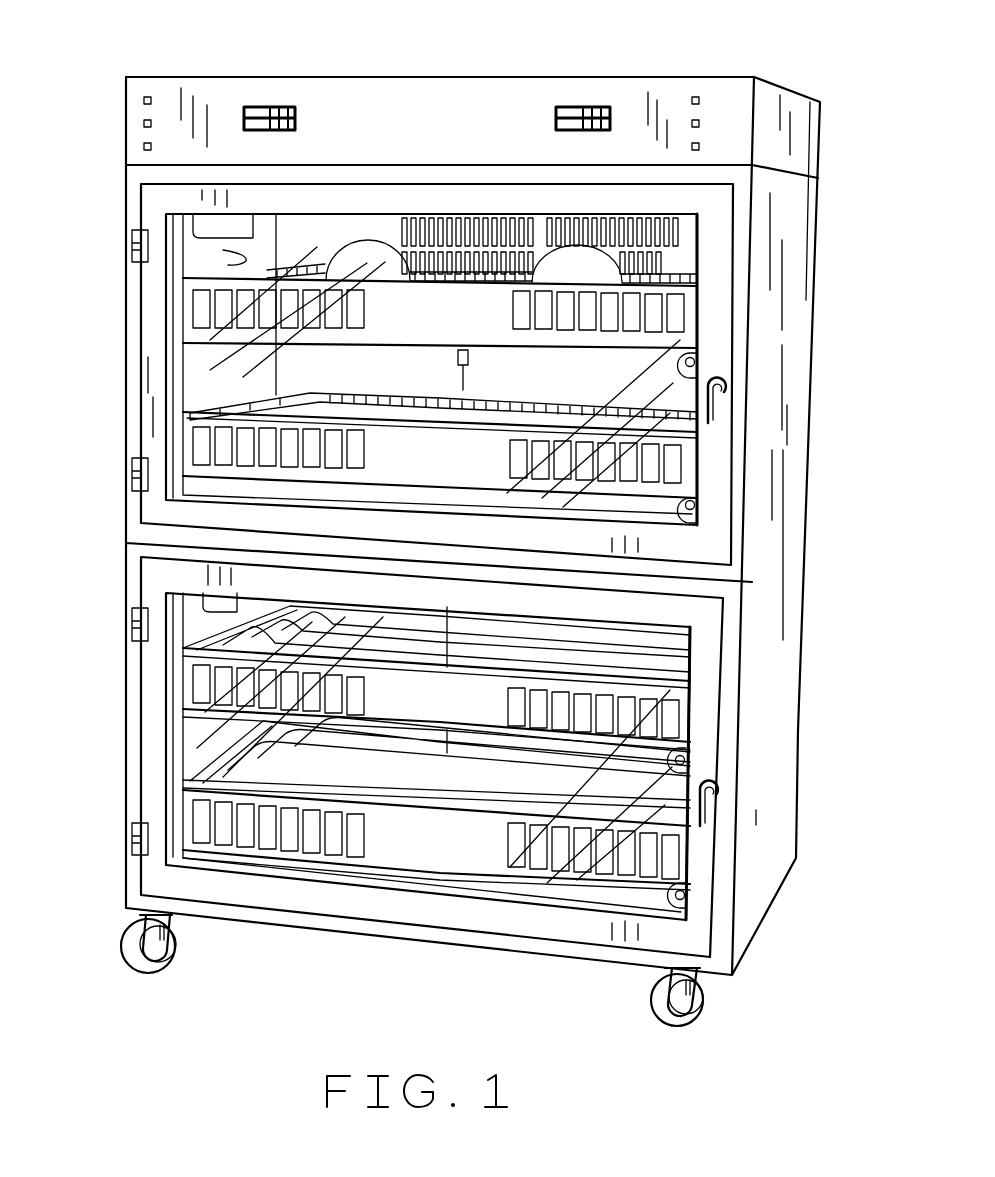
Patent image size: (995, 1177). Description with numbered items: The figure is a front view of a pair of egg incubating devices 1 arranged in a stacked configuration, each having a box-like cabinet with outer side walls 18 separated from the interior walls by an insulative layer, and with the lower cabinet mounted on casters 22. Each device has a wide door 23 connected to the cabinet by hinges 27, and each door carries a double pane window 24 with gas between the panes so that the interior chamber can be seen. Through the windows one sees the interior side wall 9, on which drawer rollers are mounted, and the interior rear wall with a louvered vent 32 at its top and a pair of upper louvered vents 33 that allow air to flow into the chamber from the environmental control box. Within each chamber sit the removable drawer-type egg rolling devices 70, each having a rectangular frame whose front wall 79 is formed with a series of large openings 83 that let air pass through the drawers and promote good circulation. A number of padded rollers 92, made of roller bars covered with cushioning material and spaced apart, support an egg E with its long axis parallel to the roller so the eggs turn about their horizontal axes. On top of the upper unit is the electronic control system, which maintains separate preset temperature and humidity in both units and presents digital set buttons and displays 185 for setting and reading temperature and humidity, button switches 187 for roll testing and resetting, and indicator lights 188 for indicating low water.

The egg incubating device 1 is at (796, 324).
The interior side wall 9 is at (333, 262).
The outer side walls 18 is at (775, 428).
The casters 22 is at (168, 929).
The door 23 is at (722, 262).
The double pane window 24 is at (207, 378).
The hinges 27 is at (135, 242).
The louvered vent 32 is at (462, 225).
The upper louvered vents 33 is at (610, 243).
The egg rolling device 70 is at (694, 362).
The front wall 79 is at (424, 325).
The openings 83 is at (668, 318).
The padded rollers 92 is at (192, 412).
The digital set buttons and displays 185 is at (258, 108).
The button switches 187 is at (144, 123).
The indicator lights 188 is at (144, 100).
The egg E is at (362, 257).